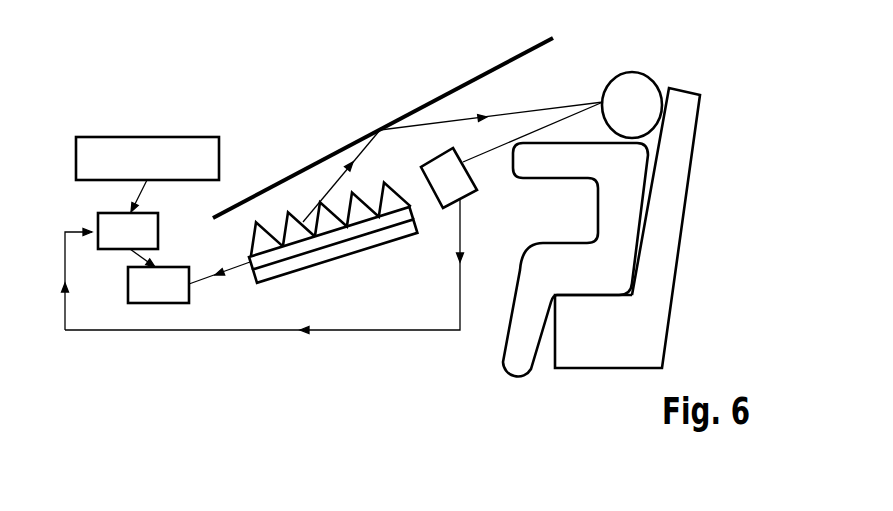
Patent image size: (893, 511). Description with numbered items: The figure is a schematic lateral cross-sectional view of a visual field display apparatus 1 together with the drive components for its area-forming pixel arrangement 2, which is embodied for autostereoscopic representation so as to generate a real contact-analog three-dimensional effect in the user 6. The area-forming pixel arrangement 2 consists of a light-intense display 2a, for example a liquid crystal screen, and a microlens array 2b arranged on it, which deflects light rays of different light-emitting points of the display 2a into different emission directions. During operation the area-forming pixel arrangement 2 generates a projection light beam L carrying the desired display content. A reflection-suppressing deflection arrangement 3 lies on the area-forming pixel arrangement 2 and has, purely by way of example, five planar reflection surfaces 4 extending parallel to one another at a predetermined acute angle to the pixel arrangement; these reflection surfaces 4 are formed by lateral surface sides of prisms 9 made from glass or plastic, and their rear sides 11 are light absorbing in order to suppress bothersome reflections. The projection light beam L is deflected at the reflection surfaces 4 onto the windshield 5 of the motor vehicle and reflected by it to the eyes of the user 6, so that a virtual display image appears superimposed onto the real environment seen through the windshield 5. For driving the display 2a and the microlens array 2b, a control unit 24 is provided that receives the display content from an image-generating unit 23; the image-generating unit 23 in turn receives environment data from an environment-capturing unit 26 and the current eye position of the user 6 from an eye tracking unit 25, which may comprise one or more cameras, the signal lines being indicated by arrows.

The visual field display apparatus 1 is at (255, 92).
The area-forming pixel arrangement 2 is at (344, 255).
The display 2a is at (374, 240).
The microlens array 2b is at (307, 252).
The reflection-suppressing deflection arrangement 3 is at (321, 224).
The reflection surfaces 4 is at (281, 243).
The windshield 5 is at (432, 102).
The user 6 is at (634, 80).
The prisms 9 is at (364, 208).
The rear sides 11 is at (262, 240).
The image-generating unit 23 is at (158, 226).
The control unit 24 is at (190, 293).
The eye tracking unit 25 is at (475, 193).
The environment-capturing unit 26 is at (153, 160).
The projection light beam L is at (338, 160).